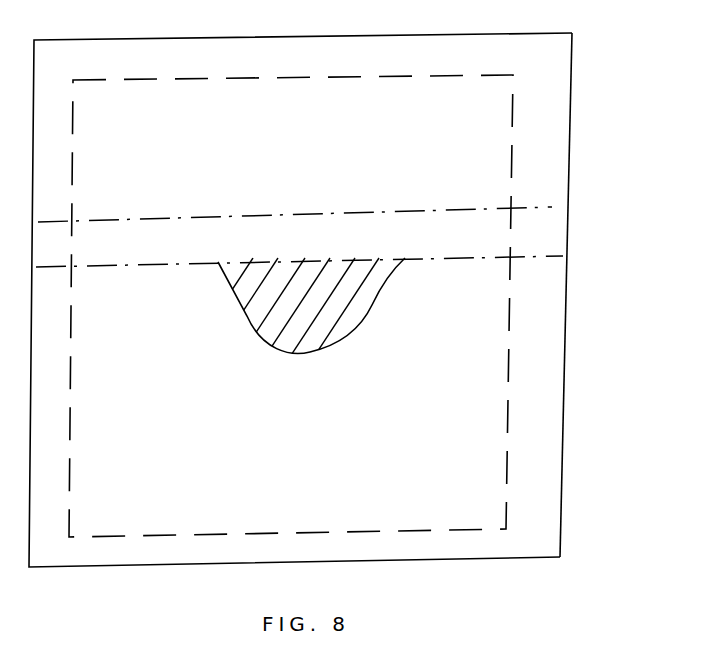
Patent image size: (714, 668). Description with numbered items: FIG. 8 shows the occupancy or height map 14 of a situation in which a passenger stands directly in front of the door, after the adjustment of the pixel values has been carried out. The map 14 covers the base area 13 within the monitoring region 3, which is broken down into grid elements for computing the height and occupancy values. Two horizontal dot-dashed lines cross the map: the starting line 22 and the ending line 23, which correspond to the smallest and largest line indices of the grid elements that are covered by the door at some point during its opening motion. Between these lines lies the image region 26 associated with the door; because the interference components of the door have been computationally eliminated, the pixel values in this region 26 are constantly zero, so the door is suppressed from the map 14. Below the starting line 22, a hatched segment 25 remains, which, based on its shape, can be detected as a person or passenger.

The monitoring region 3 is at (452, 482).
The occupancy or height map 14 is at (569, 109).
The base area 13 is at (532, 377).
The ending line 23 is at (552, 208).
The starting line 22 is at (543, 257).
The image region associated with the door 26 is at (328, 226).
The segment 25 is at (312, 340).